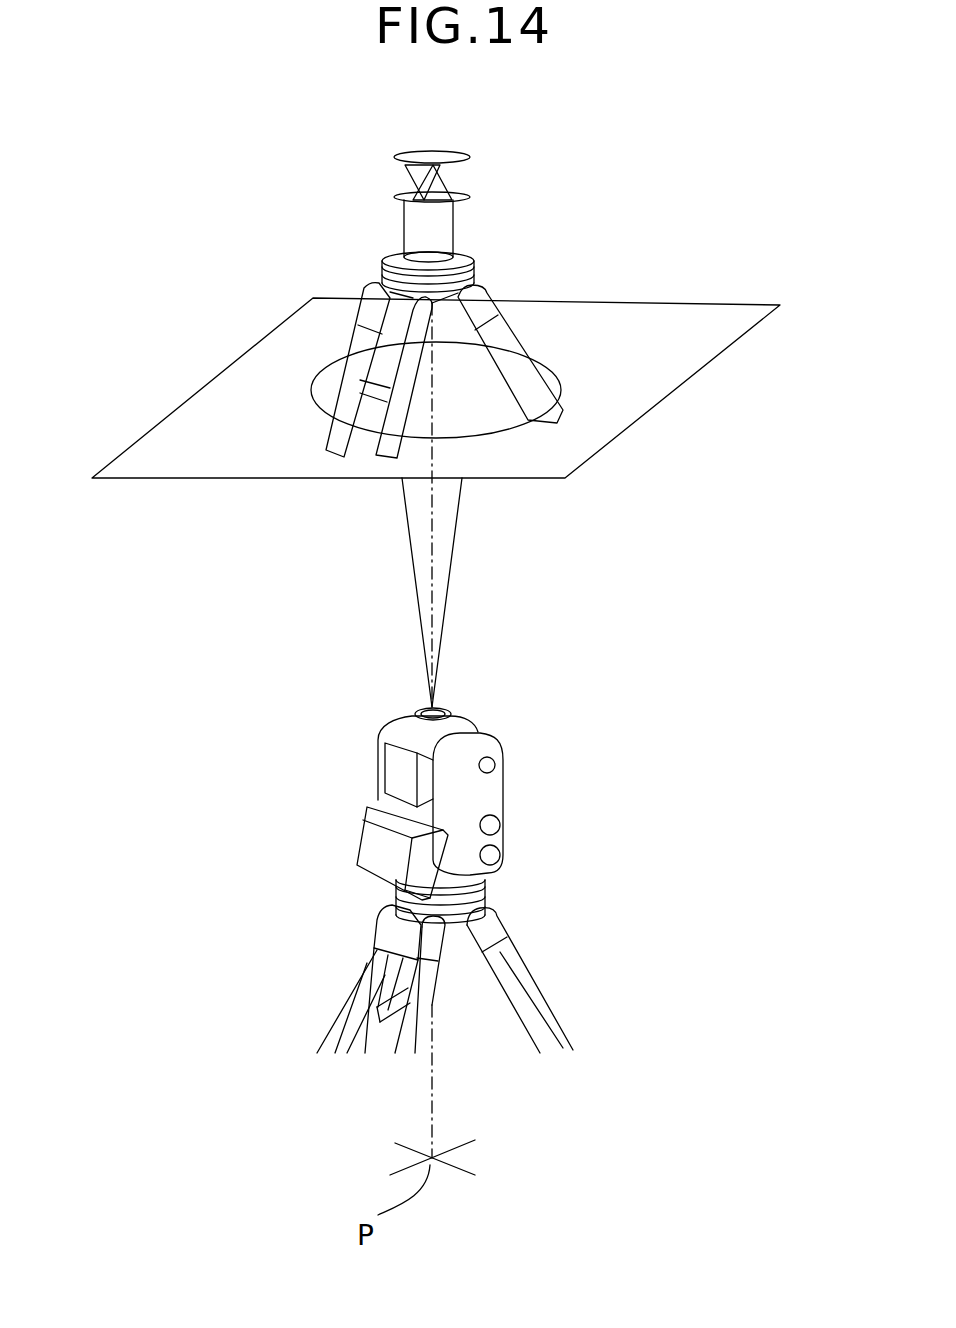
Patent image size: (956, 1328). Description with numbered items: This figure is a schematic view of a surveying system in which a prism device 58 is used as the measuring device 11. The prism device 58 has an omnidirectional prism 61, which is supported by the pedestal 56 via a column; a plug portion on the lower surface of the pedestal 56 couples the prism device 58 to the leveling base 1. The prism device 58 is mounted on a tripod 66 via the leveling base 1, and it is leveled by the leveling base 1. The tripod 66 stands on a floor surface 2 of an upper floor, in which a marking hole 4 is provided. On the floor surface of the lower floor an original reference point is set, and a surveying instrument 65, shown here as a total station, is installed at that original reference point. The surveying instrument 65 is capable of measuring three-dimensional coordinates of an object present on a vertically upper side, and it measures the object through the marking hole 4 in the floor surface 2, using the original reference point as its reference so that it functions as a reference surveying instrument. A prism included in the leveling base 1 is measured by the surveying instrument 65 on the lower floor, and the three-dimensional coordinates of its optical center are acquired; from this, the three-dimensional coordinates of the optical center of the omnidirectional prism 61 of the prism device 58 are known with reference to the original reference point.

The leveling base 1 is at (419, 284).
The floor surface 2 is at (696, 316).
The marking hole 4 is at (320, 393).
The measuring device 11 is at (432, 176).
The pedestal 56 is at (385, 257).
The prism device 58 is at (415, 156).
The omnidirectional prism 61 is at (453, 177).
The surveying instrument 65 is at (376, 770).
The tripod 66 is at (527, 348).